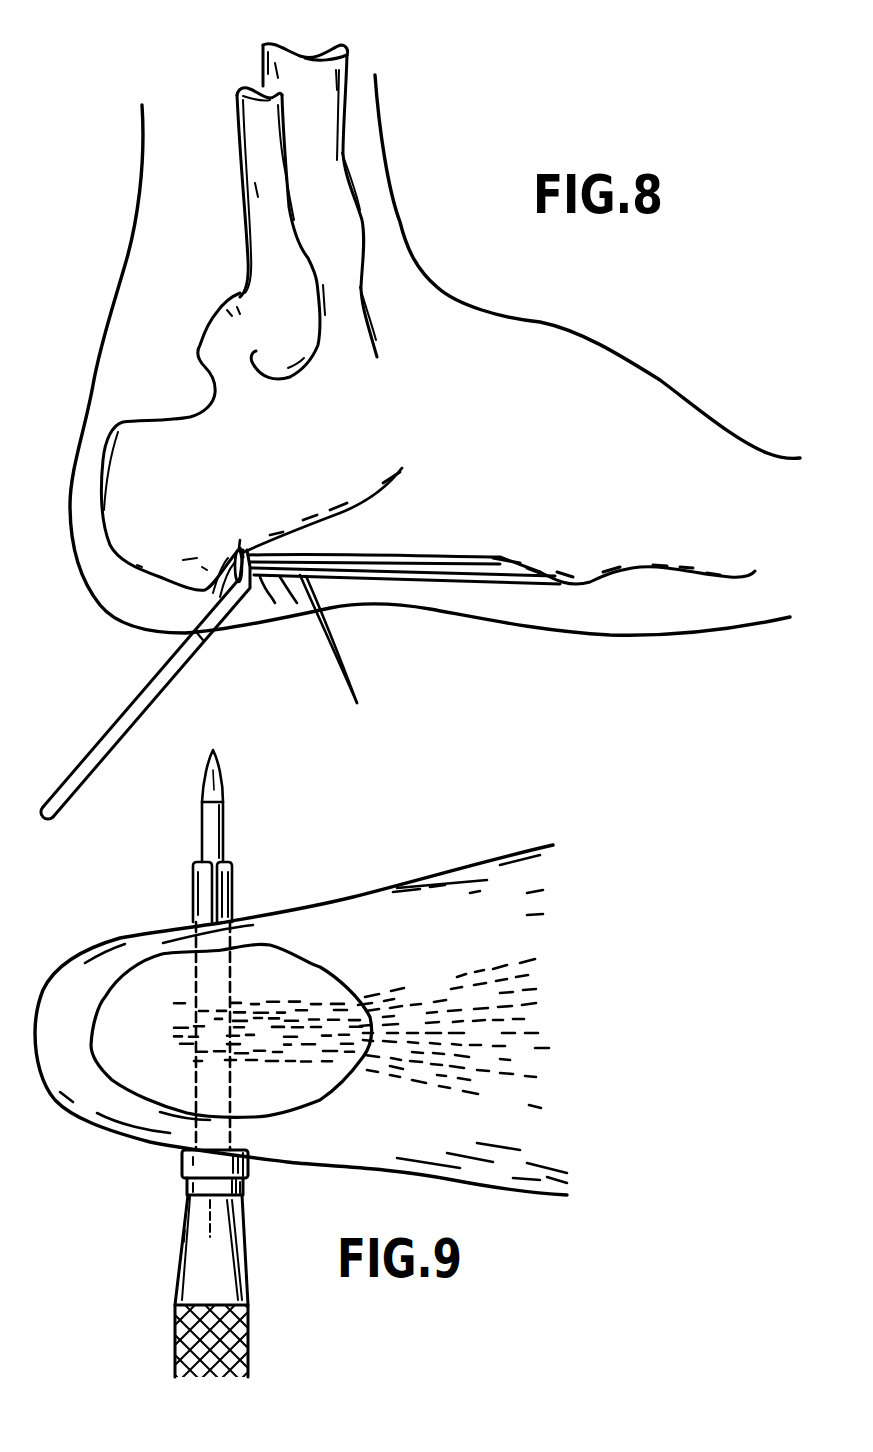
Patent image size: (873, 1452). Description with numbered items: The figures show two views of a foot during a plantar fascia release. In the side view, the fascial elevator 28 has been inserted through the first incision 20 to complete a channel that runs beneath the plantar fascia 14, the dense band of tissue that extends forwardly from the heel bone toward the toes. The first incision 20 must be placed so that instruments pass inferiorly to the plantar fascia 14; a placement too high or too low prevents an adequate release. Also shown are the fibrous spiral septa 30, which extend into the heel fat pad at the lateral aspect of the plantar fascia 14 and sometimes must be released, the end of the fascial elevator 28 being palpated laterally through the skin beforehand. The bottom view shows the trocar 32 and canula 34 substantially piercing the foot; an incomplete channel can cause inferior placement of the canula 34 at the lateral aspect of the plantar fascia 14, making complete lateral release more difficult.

In FIG. 8, the plantar fascia 14 is at (383, 578).
In FIG. 8, the first incision 20 is at (245, 580).
In FIG. 8, the fascial elevator 28 is at (157, 697).
In FIG. 8, the fibrous spiral septa 30 is at (338, 657).
In FIG. 9, the trocar 32 is at (225, 812).
In FIG. 9, the canula 34 is at (232, 895).